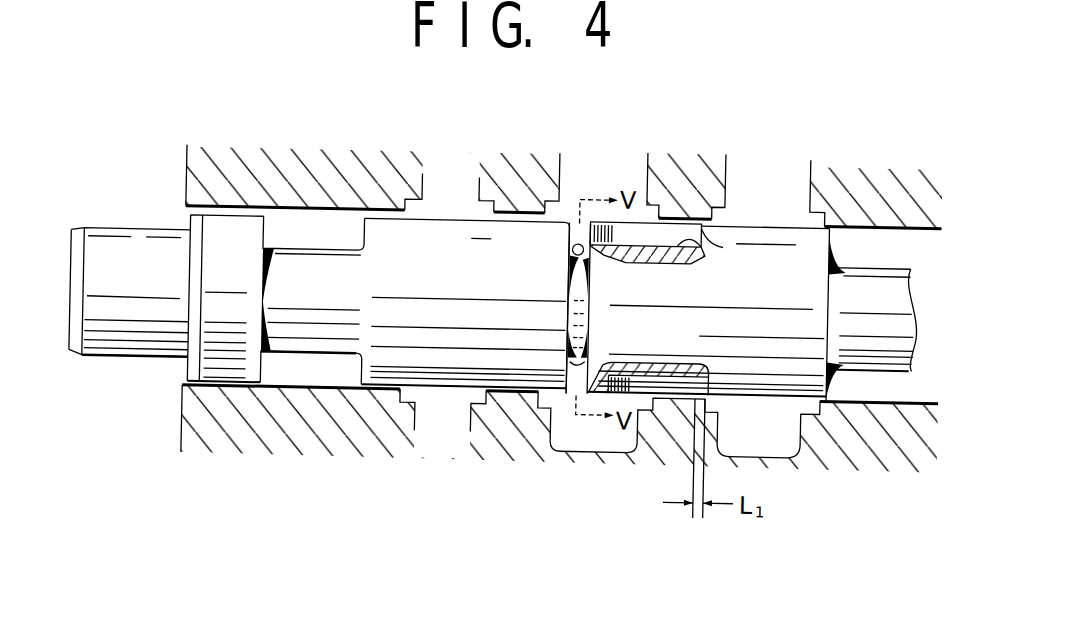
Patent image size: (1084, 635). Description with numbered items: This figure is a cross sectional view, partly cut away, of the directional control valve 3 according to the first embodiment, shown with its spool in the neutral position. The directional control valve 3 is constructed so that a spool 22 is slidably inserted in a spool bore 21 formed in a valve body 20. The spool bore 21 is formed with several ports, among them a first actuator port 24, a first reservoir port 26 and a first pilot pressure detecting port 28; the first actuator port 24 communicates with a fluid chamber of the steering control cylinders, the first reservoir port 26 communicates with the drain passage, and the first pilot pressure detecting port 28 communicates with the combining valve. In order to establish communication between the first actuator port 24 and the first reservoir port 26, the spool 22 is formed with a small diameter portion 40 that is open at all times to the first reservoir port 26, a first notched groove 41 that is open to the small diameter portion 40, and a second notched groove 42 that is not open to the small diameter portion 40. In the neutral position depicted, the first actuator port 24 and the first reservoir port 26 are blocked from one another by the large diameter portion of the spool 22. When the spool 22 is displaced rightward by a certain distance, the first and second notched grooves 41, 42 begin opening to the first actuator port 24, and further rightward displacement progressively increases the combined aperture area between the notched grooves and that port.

The directional control valve 3 is at (876, 172).
The valve body 20 is at (704, 166).
The spool bore 21 is at (867, 221).
The spool 22 is at (789, 352).
The first actuator port 24 is at (723, 170).
The first reservoir port 26 is at (558, 172).
The first pilot pressure detecting port 28 is at (477, 193).
The small diameter portion 40 is at (567, 239).
The first notched groove 41 is at (696, 243).
The second notched groove 42 is at (647, 354).